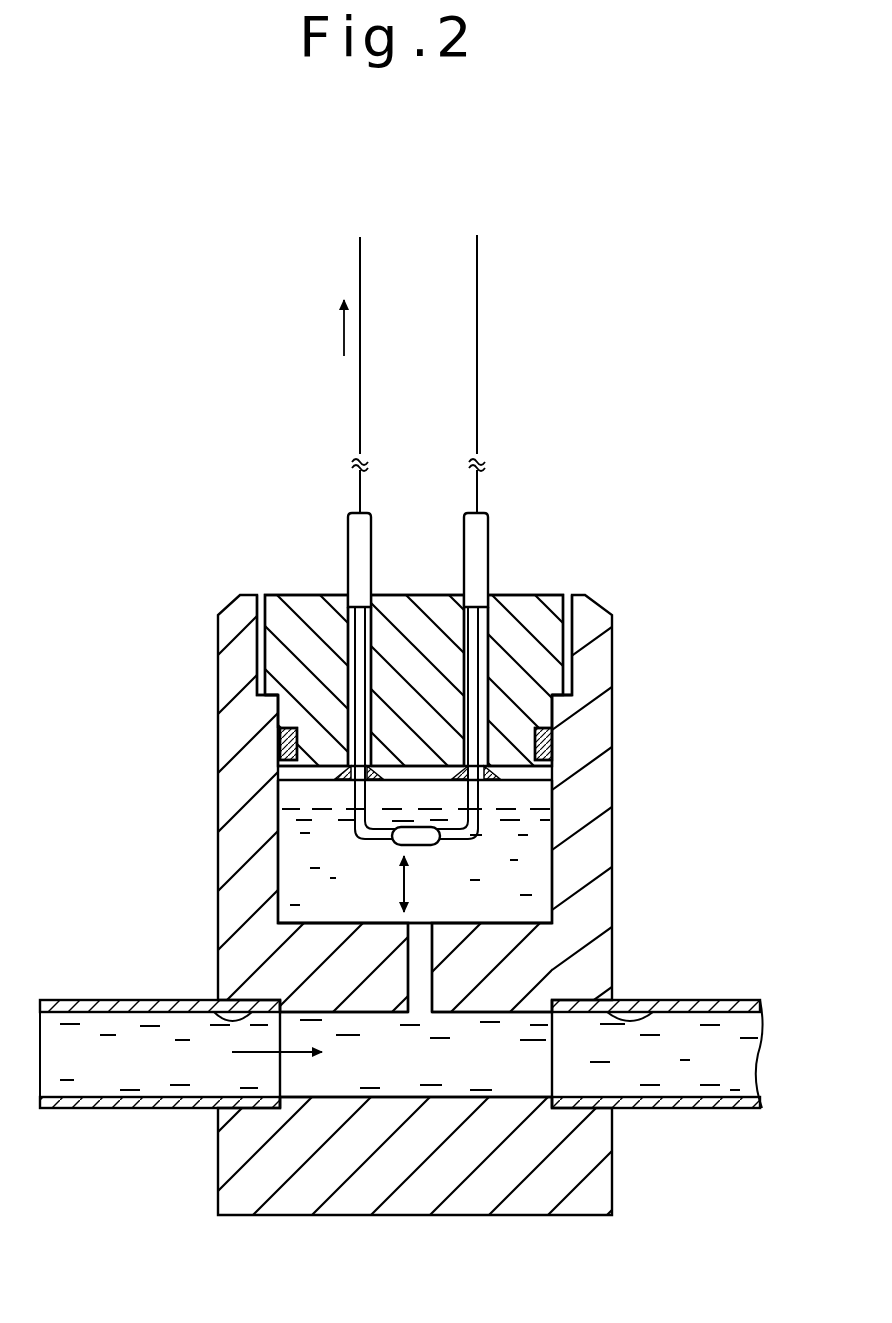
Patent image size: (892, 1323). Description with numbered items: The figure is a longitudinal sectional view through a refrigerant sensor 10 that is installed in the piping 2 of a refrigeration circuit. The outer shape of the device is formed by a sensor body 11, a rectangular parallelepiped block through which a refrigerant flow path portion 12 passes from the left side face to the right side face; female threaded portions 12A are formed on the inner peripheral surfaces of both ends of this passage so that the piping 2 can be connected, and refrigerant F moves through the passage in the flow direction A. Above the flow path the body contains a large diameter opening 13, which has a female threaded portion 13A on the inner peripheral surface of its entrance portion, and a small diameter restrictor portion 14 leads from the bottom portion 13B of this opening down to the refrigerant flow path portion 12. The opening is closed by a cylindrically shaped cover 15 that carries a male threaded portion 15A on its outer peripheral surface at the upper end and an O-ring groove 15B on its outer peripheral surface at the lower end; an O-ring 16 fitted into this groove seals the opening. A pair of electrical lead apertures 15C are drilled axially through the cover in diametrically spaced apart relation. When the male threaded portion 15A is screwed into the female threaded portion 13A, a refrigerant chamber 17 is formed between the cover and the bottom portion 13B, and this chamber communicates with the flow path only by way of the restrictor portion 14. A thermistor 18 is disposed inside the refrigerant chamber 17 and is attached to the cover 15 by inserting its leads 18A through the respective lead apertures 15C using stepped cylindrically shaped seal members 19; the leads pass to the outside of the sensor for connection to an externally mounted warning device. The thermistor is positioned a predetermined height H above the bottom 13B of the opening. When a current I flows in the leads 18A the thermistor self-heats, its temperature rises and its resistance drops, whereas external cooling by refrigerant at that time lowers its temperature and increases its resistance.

The piping 2 is at (730, 1098).
The refrigerant sensor 10 is at (590, 576).
The sensor body 11 is at (622, 815).
The refrigerant flow path portion 12 is at (553, 998).
The female threaded portion 12A is at (232, 1016).
The large diameter opening 13 is at (540, 852).
The female threaded portion 13A is at (578, 630).
The bottom portion 13B is at (292, 917).
The restrictor portion 14 is at (432, 976).
The cover 15 is at (297, 610).
The male threaded portion 15A is at (256, 617).
The O-ring groove 15B is at (554, 735).
The electrical lead aperture 15C is at (346, 656).
The O-ring 16 is at (553, 752).
The refrigerant chamber 17 is at (298, 858).
The thermistor 18 is at (398, 843).
The lead 18A is at (356, 530).
The seal member 19 is at (338, 771).
The flow direction A is at (263, 1054).
The fluid F is at (666, 1078).
The predetermined height H is at (391, 884).
The current I is at (333, 328).